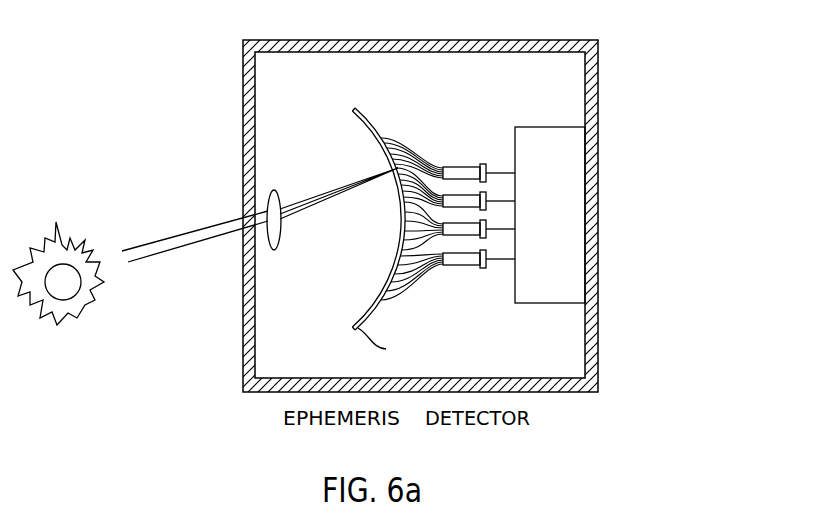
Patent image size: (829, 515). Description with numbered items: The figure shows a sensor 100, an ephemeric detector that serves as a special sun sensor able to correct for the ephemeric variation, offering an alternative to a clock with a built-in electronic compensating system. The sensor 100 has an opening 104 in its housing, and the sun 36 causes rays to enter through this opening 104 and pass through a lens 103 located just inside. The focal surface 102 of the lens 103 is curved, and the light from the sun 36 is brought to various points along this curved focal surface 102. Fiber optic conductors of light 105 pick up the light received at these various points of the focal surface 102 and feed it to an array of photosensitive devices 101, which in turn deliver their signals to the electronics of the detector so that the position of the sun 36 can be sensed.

The sun 36 is at (88, 255).
The sensor 100 is at (462, 40).
The array of photosensitive devices 101 is at (470, 165).
The focal surface 102 is at (375, 128).
The lens 103 is at (280, 193).
The opening 104 is at (242, 213).
The fiber optic conductors of light 105 is at (425, 148).